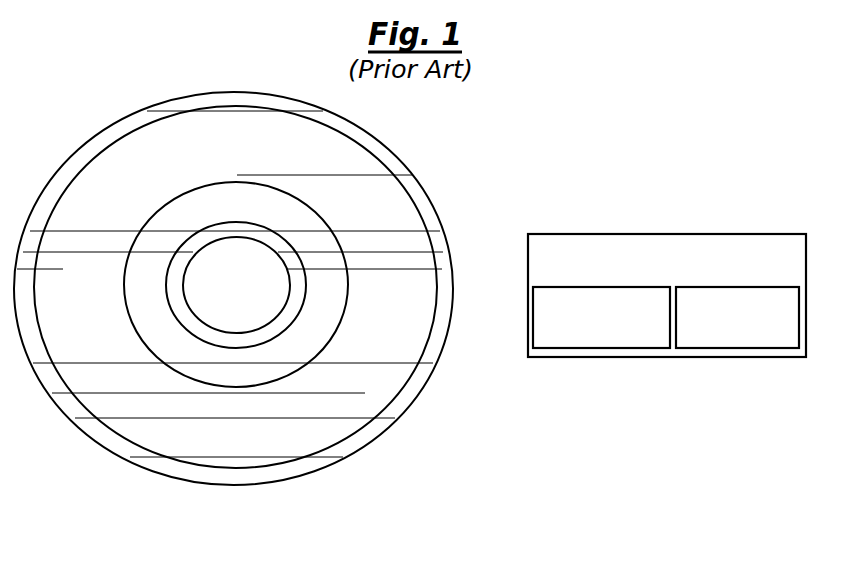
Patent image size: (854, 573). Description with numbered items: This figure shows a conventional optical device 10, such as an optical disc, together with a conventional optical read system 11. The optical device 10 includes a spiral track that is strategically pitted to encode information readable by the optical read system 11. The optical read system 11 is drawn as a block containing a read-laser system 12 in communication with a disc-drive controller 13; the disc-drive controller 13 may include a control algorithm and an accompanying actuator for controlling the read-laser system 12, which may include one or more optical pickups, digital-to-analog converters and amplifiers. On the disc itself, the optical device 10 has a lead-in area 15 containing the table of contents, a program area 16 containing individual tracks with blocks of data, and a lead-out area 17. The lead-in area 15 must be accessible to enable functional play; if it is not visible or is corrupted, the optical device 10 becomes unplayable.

The optical device 10 is at (270, 320).
The optical read system 11 is at (667, 299).
The read-laser system 12 is at (637, 345).
The disc-drive controller 13 is at (777, 347).
The lead-in area 15 is at (320, 243).
The program area 16 is at (397, 240).
The lead-out area 17 is at (390, 160).